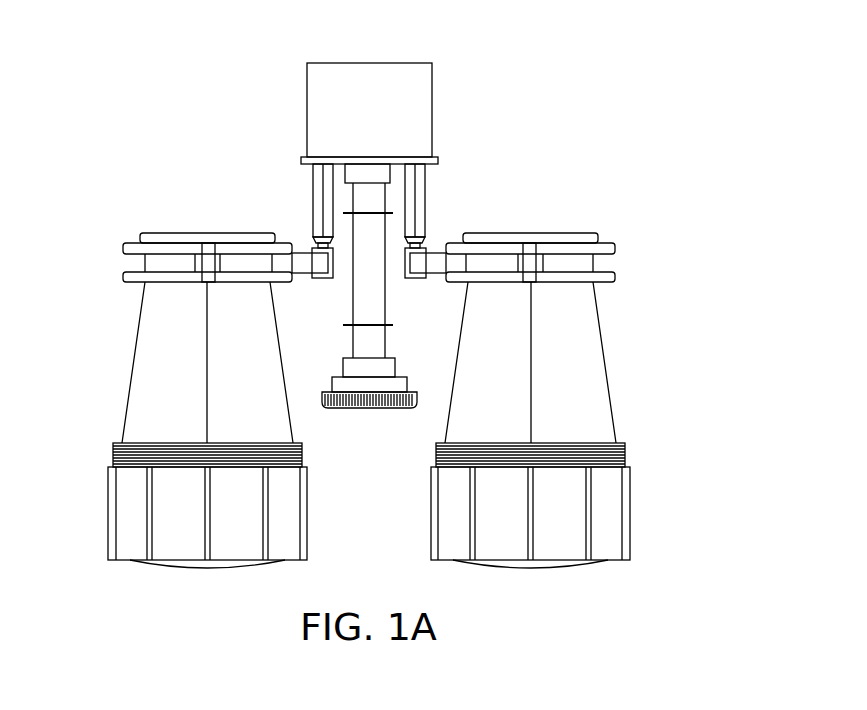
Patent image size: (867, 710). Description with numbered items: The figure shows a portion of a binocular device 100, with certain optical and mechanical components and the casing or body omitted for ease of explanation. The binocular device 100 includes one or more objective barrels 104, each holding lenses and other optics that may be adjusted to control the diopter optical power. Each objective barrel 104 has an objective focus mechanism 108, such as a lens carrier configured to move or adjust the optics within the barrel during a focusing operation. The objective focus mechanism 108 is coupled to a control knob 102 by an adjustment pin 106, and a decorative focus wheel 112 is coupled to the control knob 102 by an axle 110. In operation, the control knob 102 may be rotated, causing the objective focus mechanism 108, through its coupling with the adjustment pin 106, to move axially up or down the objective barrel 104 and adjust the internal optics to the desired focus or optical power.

The binocular device 100 is at (140, 110).
The control knob 102 is at (432, 110).
The objective barrel 104 is at (137, 365).
The adjustment pin 106 is at (420, 195).
The objective focus mechanism 108 is at (300, 265).
The axle 110 is at (373, 295).
The decorative focus wheel 112 is at (390, 410).